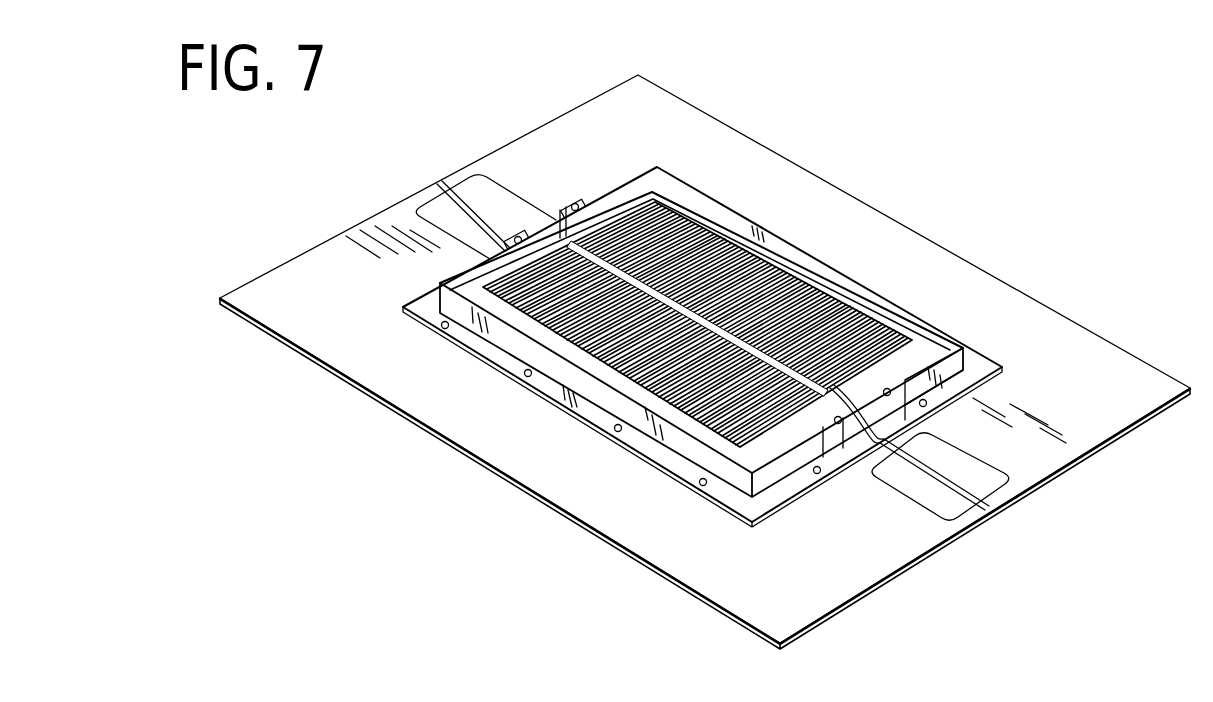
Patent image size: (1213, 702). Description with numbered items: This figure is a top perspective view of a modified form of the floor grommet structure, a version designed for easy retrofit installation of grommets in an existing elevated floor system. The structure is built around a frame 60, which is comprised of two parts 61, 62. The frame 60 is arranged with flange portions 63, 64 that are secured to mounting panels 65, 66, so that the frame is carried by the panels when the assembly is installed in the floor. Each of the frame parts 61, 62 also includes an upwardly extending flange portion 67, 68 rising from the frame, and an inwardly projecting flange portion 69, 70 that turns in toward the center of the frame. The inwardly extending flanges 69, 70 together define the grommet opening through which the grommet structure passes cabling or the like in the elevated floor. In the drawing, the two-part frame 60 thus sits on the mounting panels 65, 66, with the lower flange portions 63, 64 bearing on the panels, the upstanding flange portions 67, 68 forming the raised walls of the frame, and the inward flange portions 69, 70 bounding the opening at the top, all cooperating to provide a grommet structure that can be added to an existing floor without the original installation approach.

The frame 60 is at (942, 350).
The frame part 61 is at (715, 435).
The frame part 62 is at (798, 252).
The flange portion 63 is at (793, 487).
The flange portion 64 is at (975, 380).
The mounting panel 65 is at (838, 582).
The mounting panel 66 is at (1123, 384).
The upwardly extending flange portion 67 is at (507, 337).
The upwardly extending flange portion 68 is at (963, 381).
The inwardly projecting flange portion 69 is at (474, 268).
The inwardly projecting flange portion 70 is at (712, 203).